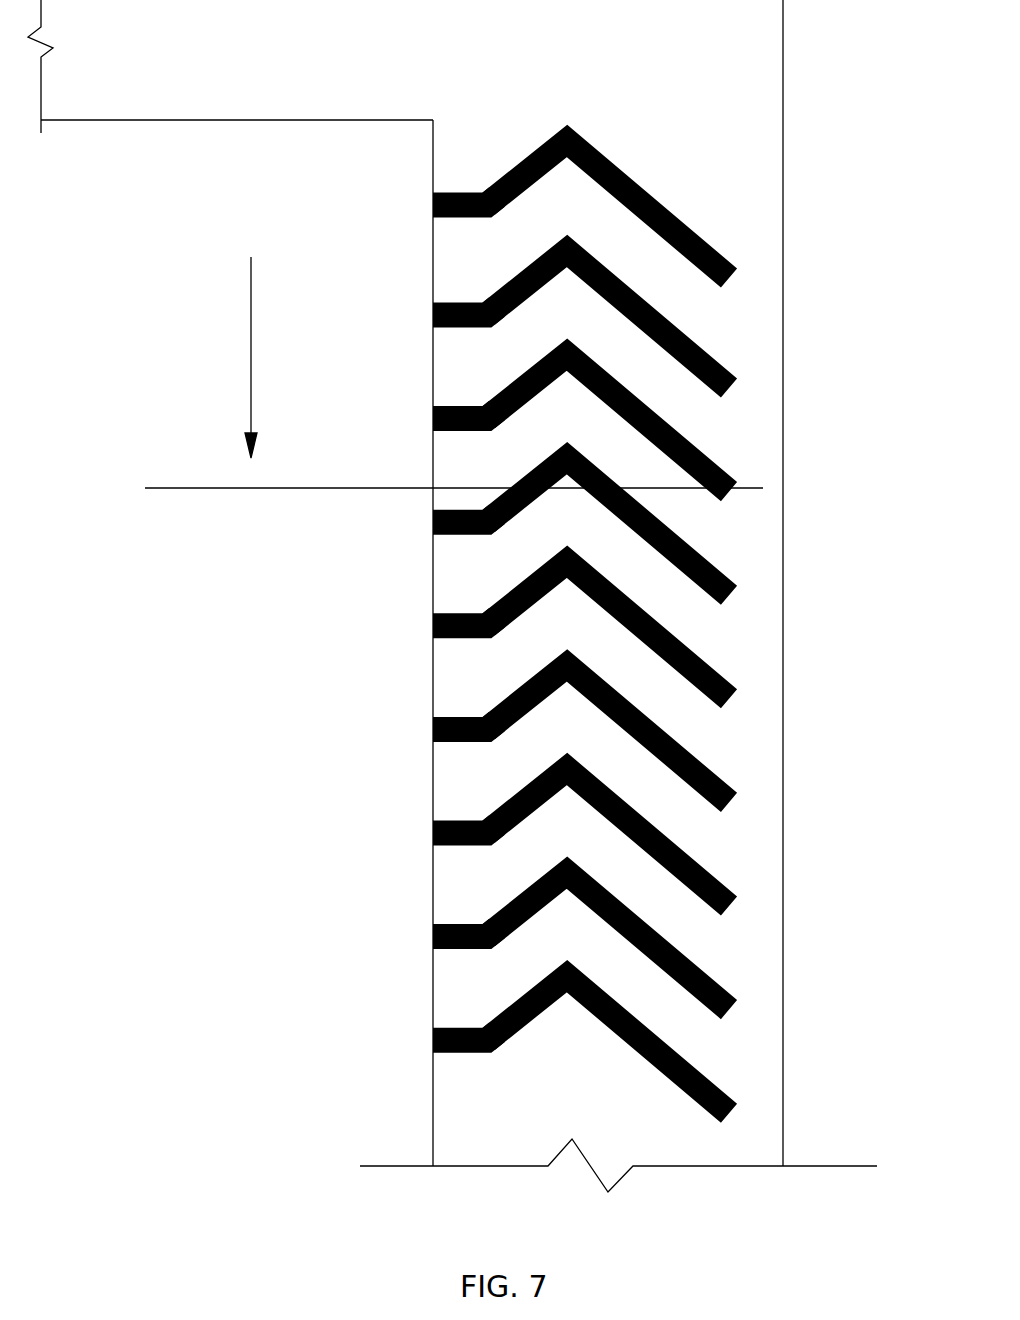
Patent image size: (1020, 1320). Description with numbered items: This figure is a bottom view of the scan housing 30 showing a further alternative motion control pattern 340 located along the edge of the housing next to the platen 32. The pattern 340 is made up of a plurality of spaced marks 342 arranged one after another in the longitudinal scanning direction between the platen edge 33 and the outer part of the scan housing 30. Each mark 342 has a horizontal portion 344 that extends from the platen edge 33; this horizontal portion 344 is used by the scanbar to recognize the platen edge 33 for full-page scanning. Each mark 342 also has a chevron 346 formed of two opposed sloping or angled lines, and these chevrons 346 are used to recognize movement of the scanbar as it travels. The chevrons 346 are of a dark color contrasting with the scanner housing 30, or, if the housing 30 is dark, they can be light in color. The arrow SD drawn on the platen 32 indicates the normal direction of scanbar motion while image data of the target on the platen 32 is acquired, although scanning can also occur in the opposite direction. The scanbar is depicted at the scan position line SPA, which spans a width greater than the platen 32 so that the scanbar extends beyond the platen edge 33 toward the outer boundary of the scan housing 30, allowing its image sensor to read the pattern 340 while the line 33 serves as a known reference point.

The scan housing 30 is at (738, 750).
The platen 32 is at (240, 649).
The platen edge 33 is at (432, 380).
The motion control pattern 340 is at (712, 320).
The mark 342 is at (732, 572).
The horizontal portion 344 is at (468, 192).
The chevron 346 is at (620, 172).
The scanning direction arrow SD is at (251, 320).
The scan position line SPA is at (150, 489).